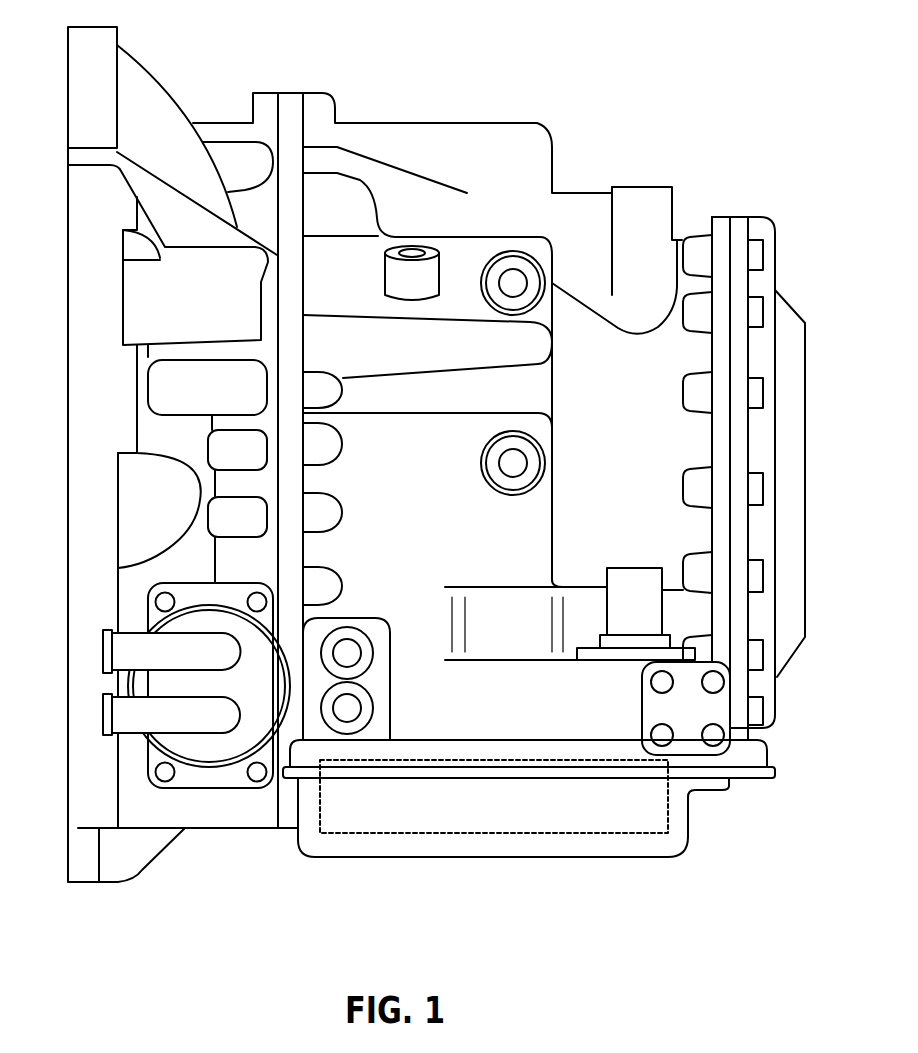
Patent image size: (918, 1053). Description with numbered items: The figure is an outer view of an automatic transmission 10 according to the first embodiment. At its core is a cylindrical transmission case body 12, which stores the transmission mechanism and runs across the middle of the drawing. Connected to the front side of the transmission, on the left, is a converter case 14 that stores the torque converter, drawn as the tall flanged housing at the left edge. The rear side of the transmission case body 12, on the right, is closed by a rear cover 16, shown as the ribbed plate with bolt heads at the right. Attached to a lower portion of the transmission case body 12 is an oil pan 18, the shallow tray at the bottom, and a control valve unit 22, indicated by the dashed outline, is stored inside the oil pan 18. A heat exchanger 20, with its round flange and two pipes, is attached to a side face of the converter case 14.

The automatic transmission 10 is at (547, 112).
The transmission case body 12 is at (573, 205).
The converter case 14 is at (85, 238).
The rear cover 16 is at (802, 360).
The oil pan 18 is at (645, 847).
The heat exchanger 20 is at (205, 682).
The control valve unit 22 is at (457, 822).